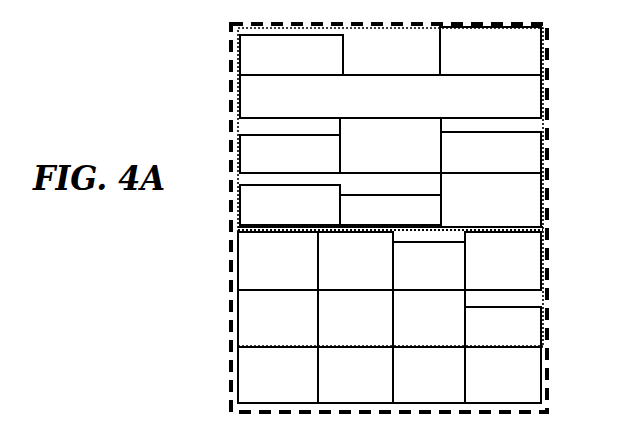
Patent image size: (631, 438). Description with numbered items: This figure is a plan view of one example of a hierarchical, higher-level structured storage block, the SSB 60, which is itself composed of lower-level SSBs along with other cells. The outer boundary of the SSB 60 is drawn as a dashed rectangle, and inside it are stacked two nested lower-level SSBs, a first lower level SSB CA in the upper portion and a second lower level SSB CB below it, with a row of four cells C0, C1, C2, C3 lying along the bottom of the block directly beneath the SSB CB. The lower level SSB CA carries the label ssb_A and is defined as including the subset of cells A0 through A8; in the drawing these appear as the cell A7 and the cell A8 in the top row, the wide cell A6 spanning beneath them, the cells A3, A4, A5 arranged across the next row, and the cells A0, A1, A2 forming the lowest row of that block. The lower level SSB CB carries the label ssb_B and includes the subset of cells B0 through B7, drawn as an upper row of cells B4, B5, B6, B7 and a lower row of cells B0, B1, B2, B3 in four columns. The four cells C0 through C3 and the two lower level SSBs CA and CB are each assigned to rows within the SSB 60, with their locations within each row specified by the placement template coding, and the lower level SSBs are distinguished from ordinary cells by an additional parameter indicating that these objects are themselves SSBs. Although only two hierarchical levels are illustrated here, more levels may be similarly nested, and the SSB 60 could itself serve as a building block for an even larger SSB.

The higher level SSB 60 is at (426, 218).
The lower level SSB CA is at (390, 127).
The lower level SSB CB is at (389, 289).
The cell A0 is at (290, 205).
The cell A1 is at (390, 210).
The cell A2 is at (491, 200).
The cell A3 is at (290, 154).
The cell A4 is at (390, 145).
The cell A5 is at (491, 152).
The cell A6 is at (390, 96).
The cell A7 is at (291, 55).
The cell A8 is at (490, 51).
The cell B0 is at (278, 318).
The cell B1 is at (355, 318).
The cell B2 is at (429, 318).
The cell B3 is at (503, 327).
The cell B4 is at (278, 261).
The cell B5 is at (355, 261).
The cell B6 is at (429, 266).
The cell B7 is at (503, 261).
The cell C0 is at (278, 375).
The cell C1 is at (355, 375).
The cell C2 is at (429, 375).
The cell C3 is at (503, 375).